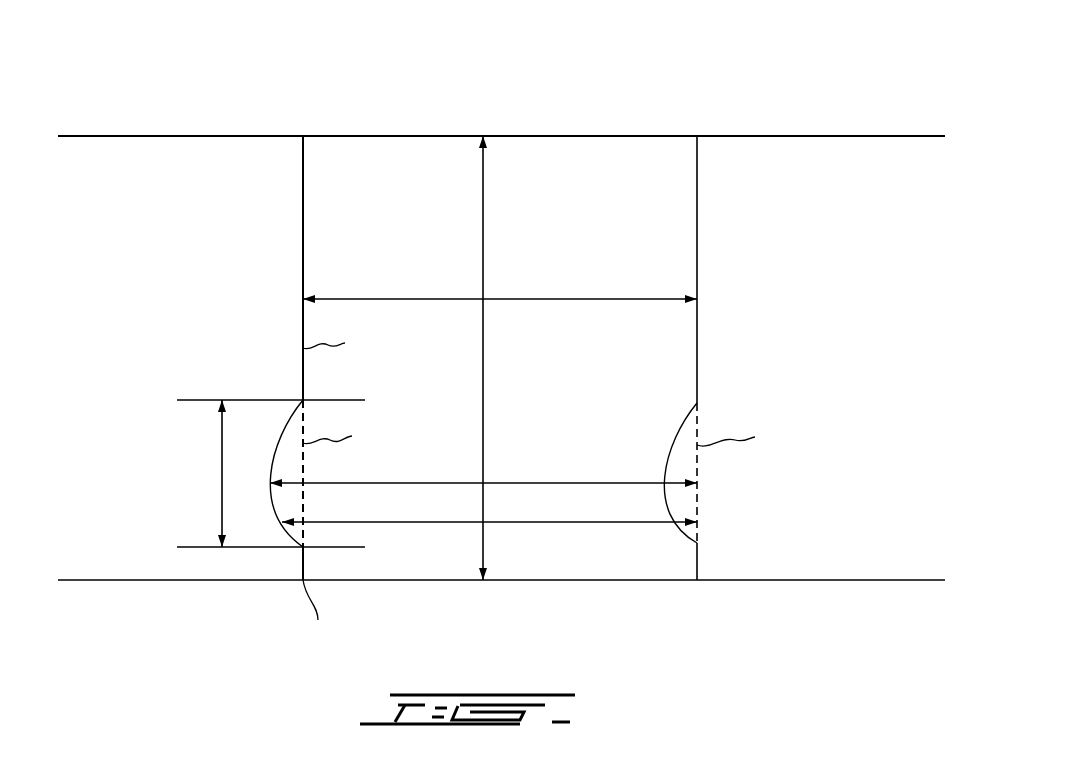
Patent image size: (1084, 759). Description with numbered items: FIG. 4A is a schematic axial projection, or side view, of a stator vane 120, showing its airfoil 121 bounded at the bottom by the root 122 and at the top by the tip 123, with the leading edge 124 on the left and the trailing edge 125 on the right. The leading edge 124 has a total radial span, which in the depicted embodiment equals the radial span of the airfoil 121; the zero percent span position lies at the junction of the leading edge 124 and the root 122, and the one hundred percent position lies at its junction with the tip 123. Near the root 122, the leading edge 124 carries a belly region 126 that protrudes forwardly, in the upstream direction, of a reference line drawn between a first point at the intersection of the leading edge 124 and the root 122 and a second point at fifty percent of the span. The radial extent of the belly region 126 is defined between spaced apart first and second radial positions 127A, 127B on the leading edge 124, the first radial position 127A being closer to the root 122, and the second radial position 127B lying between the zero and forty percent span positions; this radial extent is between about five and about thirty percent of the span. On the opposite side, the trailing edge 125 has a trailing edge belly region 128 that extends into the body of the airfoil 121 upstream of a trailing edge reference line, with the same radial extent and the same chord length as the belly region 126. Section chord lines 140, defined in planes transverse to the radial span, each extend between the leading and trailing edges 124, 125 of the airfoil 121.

The stator vane 120 is at (501, 398).
The airfoil 121 is at (757, 246).
The root 122 is at (395, 580).
The tip 123 is at (648, 135).
The leading edge 124 is at (303, 249).
The trailing edge 125 is at (697, 342).
The belly region 126 is at (266, 448).
The first radial position 127A is at (303, 547).
The second radial position 127B is at (303, 400).
The trailing edge belly region 128 is at (653, 468).
The section chord lines 140 is at (578, 298).